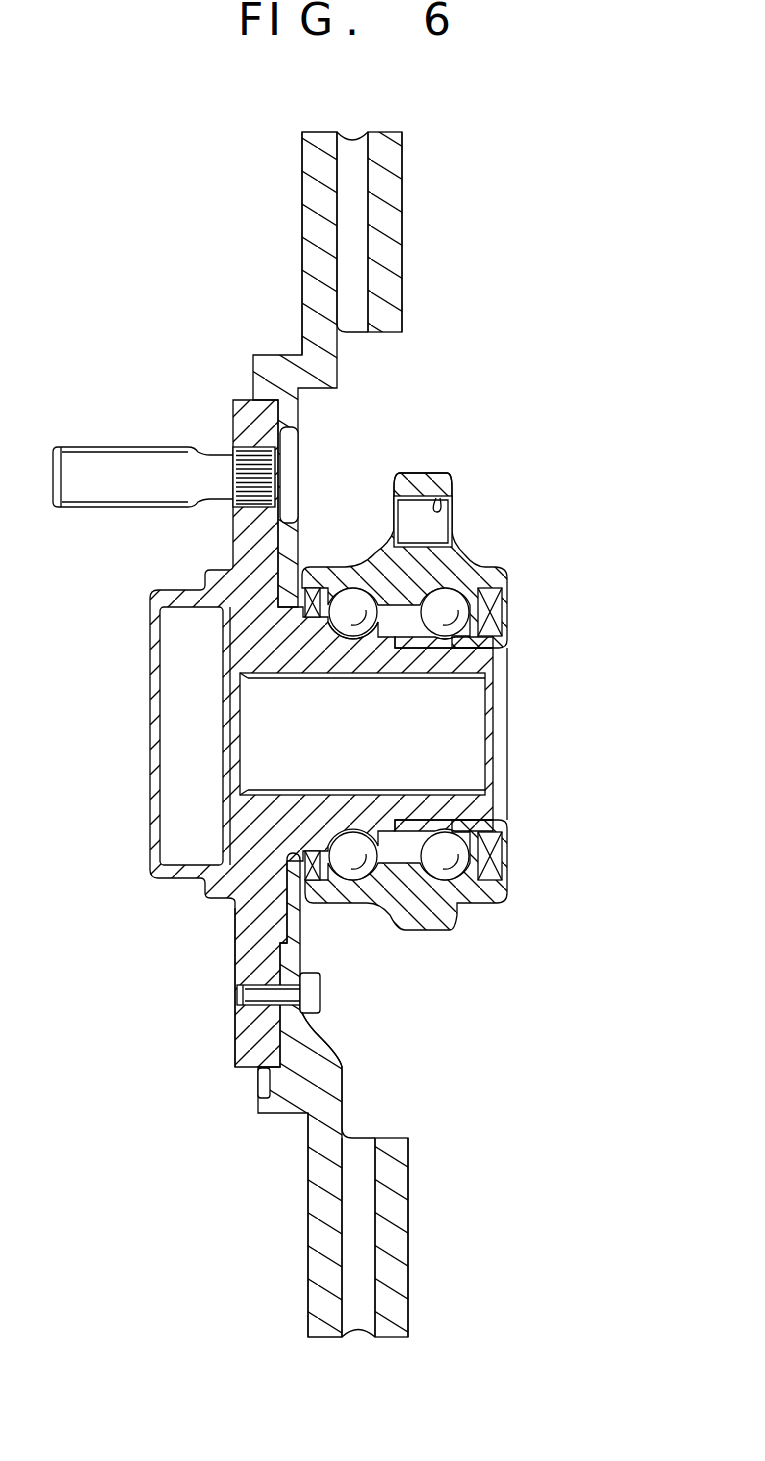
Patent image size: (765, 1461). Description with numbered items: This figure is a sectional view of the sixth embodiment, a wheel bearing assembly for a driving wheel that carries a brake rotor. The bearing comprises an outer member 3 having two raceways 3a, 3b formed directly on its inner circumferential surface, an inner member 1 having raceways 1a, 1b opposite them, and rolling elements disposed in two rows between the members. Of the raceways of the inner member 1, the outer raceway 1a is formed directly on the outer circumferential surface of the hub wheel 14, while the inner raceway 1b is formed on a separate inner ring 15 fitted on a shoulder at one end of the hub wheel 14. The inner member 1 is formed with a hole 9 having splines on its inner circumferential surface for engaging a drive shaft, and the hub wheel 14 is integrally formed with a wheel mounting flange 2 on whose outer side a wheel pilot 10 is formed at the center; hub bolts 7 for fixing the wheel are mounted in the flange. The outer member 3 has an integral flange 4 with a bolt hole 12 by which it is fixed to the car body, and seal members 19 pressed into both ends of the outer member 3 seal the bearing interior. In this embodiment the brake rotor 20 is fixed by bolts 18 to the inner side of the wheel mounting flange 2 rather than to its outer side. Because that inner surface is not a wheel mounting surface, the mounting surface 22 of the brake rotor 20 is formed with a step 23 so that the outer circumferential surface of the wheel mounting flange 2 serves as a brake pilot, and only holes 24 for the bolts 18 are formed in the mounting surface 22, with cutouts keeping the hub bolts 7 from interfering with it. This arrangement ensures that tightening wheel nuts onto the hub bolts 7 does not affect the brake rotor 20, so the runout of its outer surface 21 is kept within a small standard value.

The inner member 1 is at (142, 598).
The outer raceway 1a is at (355, 640).
The inner raceway 1b is at (462, 626).
The wheel mounting flange 2 is at (243, 1027).
The outer member 3 is at (392, 487).
The raceway 3a is at (348, 592).
The raceway 3b is at (499, 569).
The integral flange 4 is at (408, 473).
The hub bolt 7 is at (125, 468).
The hole 9 is at (405, 781).
The wheel pilot 10 is at (165, 878).
The bolt hole 12 is at (437, 498).
The hub wheel 14 is at (443, 663).
The inner ring 15 is at (472, 668).
The bolt 18 is at (313, 975).
The seal member 19 is at (503, 603).
The brake rotor 20 is at (320, 1203).
The outer surface 21 is at (308, 1258).
The mounting surface 22 is at (283, 1043).
The step 23 is at (262, 1097).
The hole 24 is at (313, 1020).